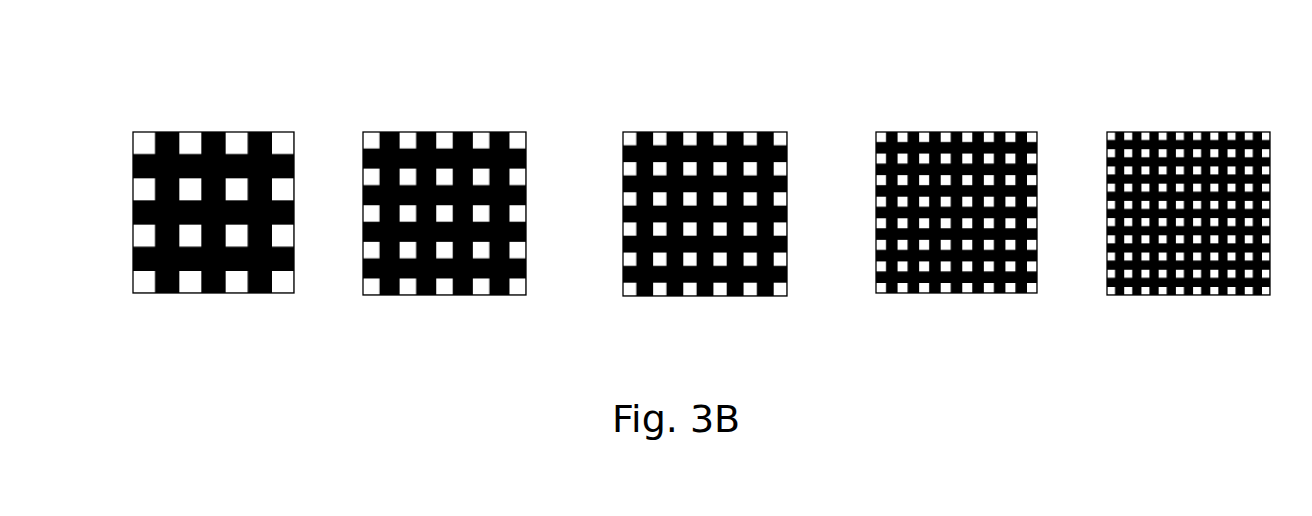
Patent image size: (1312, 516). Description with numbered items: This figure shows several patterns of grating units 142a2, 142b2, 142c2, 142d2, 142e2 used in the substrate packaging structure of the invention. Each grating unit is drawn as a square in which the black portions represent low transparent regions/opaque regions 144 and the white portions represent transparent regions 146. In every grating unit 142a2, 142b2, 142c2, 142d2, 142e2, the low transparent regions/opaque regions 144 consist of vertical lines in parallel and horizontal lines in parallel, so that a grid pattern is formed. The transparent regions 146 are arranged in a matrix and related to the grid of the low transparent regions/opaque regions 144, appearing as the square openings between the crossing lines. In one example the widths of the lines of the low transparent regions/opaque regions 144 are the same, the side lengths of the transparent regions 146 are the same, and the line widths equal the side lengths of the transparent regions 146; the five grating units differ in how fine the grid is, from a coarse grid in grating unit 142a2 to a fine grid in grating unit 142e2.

The grating unit 142a2 is at (213, 237).
The grating unit 142b2 is at (444, 237).
The grating unit 142c2 is at (705, 237).
The grating unit 142d2 is at (956, 237).
The grating unit 142e2 is at (1188, 237).
The low transparent regions/opaque regions 144 is at (163, 131).
The transparent regions 146 is at (237, 143).